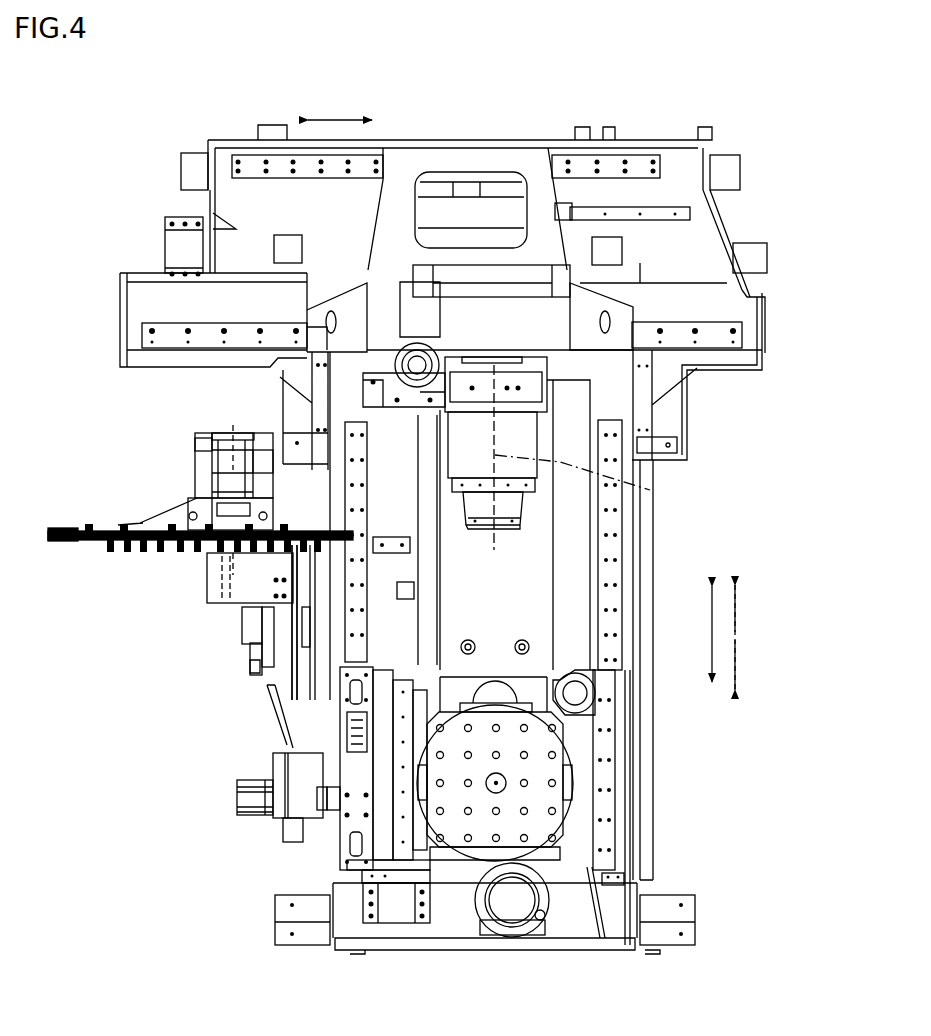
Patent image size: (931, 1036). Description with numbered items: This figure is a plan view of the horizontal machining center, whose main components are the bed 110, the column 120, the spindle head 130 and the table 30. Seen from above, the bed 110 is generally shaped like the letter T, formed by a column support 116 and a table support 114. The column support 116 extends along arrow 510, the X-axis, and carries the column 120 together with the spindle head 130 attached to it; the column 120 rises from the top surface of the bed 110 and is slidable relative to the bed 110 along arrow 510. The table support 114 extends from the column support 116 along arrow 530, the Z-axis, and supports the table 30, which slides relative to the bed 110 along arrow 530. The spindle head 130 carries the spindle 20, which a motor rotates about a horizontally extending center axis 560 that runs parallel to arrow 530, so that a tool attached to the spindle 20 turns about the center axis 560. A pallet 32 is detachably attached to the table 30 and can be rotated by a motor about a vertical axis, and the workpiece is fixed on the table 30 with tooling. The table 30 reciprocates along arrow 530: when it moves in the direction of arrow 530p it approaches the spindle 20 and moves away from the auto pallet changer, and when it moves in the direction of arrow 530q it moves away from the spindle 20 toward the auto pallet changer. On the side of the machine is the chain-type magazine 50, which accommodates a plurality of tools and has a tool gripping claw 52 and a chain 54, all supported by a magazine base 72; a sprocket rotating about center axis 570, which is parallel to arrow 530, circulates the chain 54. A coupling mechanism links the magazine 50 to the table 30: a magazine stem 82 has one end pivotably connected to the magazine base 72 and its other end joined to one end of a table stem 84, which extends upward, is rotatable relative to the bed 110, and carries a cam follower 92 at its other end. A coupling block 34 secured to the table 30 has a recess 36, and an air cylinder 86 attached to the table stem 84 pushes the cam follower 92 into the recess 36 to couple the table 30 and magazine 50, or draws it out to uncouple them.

The spindle 20 is at (508, 538).
The table 30 is at (574, 792).
The pallet 32 is at (548, 760).
The coupling block 34 is at (347, 810).
The recess 36 is at (325, 805).
The magazine 50 is at (117, 523).
The tool gripping claw 52 is at (340, 540).
The chain 54 is at (146, 545).
The magazine base 72 is at (235, 590).
The magazine stem 82 is at (290, 690).
The table stem 84 is at (288, 827).
The air cylinder 86 is at (247, 800).
The cam follower 92 is at (323, 787).
The bed 110 is at (700, 423).
The table support 114 is at (625, 735).
The column support 116 is at (252, 193).
The column 120 is at (538, 183).
The spindle head 130 is at (540, 437).
The arrow (X-axis direction) 510 is at (342, 112).
The arrow (Z-axis direction) 530 is at (706, 634).
The arrow (table direction toward spindle) 530p is at (738, 600).
The arrow (table direction away from spindle) 530q is at (738, 662).
The center axis 560 is at (640, 488).
The center axis 570 is at (212, 569).